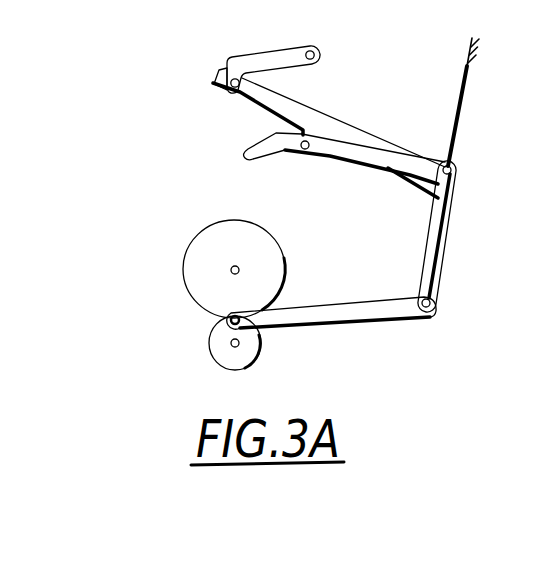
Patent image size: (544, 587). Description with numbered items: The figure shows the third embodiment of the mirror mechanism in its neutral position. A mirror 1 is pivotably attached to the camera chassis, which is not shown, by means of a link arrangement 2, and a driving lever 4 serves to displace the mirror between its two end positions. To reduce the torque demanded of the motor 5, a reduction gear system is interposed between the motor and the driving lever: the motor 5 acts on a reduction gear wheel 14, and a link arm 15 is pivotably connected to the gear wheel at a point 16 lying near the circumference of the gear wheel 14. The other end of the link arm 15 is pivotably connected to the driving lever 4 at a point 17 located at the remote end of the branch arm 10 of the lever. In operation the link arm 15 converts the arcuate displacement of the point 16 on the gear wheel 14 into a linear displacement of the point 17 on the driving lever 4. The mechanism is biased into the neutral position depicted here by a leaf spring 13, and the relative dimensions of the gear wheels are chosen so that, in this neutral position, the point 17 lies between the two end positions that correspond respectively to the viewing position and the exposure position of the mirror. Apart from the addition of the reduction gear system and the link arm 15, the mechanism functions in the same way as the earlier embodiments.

The mirror 1 is at (330, 120).
The link arrangement 2 is at (238, 58).
The driving lever 4 is at (412, 153).
The motor 5 is at (211, 343).
The branch arm 10 is at (445, 250).
The leaf spring 13 is at (459, 110).
The reduction gear wheel 14 is at (184, 274).
The link arm 15 is at (375, 322).
The point 16 is at (228, 319).
The point 17 is at (433, 306).